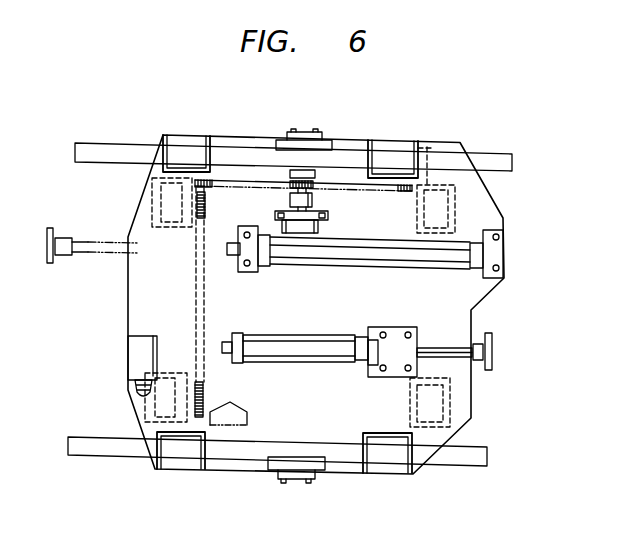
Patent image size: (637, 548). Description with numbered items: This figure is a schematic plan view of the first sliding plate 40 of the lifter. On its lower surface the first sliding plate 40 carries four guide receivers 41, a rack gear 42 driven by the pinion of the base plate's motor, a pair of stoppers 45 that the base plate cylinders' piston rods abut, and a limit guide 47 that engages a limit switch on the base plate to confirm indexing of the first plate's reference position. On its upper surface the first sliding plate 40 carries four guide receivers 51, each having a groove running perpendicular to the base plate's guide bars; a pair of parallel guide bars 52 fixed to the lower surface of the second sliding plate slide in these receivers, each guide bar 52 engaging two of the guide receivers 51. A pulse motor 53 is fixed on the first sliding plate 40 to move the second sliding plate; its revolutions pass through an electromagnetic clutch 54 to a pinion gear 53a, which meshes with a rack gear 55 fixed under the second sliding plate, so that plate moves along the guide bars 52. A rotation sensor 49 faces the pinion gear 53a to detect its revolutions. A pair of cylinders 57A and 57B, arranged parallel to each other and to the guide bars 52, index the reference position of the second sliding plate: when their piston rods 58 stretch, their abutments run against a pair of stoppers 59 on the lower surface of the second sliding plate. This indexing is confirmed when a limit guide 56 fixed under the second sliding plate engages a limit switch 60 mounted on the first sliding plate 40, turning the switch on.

The first sliding plate 40 is at (460, 320).
The guide receivers 41 is at (152, 203).
The rack gear 42 is at (195, 297).
The stoppers 45 is at (300, 133).
The limit guide 47 is at (410, 168).
The rotation sensor 49 is at (285, 173).
The guide receivers 51 is at (184, 148).
The guide bars 52 is at (493, 152).
The pulse motor 53 is at (303, 235).
The pinion gear 53a is at (292, 186).
The electromagnetic clutch 54 is at (313, 200).
The rack gear 55 is at (335, 178).
The limit guide 56 is at (240, 428).
The cylinder 57A is at (375, 250).
The cylinder 57B is at (312, 362).
The piston rods 58 is at (87, 255).
The stoppers 59 is at (50, 228).
The limit switch 60 is at (128, 352).